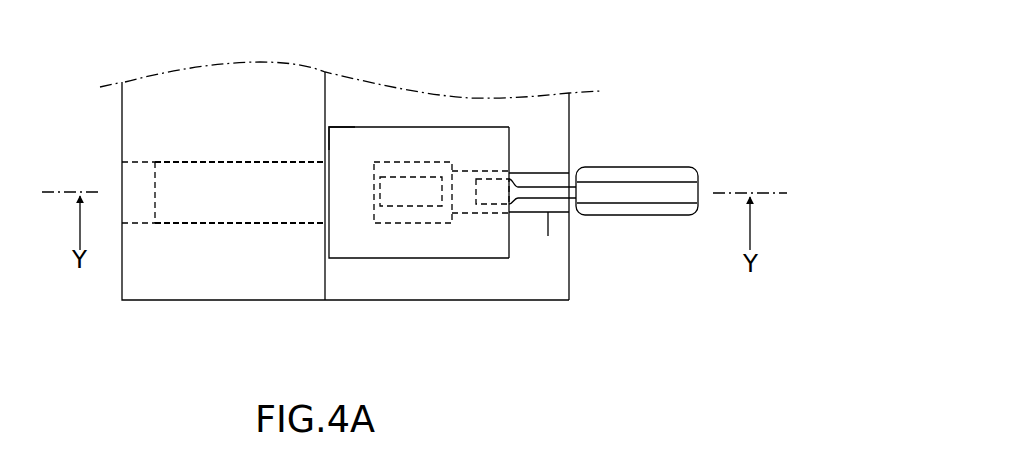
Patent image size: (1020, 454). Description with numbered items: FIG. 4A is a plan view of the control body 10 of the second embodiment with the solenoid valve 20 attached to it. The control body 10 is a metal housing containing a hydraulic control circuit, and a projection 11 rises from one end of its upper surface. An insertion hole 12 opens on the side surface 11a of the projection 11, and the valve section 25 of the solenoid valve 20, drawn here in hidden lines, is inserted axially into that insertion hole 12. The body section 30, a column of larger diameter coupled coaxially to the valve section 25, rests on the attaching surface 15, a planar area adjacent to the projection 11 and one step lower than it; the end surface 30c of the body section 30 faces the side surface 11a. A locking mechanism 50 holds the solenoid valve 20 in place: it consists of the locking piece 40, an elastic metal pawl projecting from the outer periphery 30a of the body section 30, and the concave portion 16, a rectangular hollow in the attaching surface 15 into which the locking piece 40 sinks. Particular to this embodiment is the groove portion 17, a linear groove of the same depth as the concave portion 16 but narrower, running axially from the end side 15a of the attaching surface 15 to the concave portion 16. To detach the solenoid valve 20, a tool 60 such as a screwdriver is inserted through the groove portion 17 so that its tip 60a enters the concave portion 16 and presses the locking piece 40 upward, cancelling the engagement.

The control body 10 is at (114, 290).
The projection 11 is at (224, 90).
The side surface 11a is at (326, 90).
The insertion hole 12 is at (135, 166).
The attaching surface 15 is at (542, 288).
The end side 15a is at (569, 113).
The concave portion 16 is at (385, 223).
The groove portion 17 is at (548, 236).
The solenoid valve 20 is at (419, 125).
The valve section 25 is at (247, 180).
The body section 30 is at (471, 142).
The outer periphery 30a is at (498, 142).
The end surface 30c is at (330, 127).
The locking piece 40 is at (410, 195).
The locking mechanism 50 is at (433, 333).
The tool 60 is at (676, 165).
The tip 60a is at (476, 200).